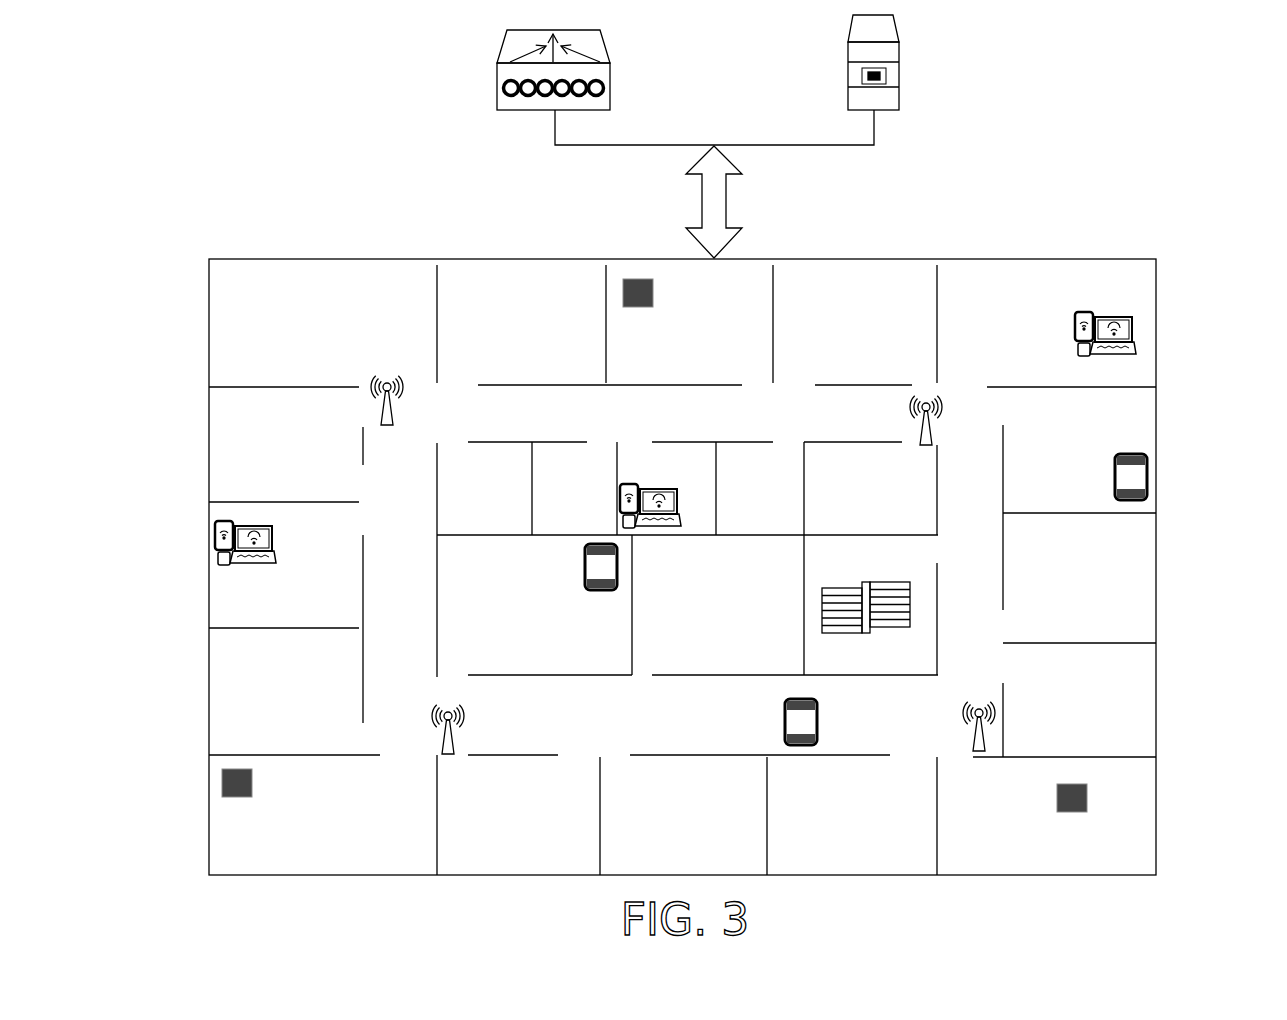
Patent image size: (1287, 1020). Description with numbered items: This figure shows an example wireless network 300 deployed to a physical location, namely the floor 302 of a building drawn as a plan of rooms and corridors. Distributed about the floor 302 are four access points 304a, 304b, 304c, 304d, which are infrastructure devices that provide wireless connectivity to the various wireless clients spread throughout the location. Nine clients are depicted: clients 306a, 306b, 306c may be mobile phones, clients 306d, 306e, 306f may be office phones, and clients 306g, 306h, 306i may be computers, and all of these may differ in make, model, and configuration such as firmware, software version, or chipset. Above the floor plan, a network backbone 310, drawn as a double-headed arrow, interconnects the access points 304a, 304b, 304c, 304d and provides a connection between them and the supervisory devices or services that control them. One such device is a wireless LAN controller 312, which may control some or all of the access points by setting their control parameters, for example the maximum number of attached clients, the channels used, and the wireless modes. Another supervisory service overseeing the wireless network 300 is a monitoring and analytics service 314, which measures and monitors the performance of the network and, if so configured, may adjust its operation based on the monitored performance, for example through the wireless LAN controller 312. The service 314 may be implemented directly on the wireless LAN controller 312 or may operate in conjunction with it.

The wireless network 300 is at (1216, 89).
The floor 302 is at (214, 886).
The access point 304a is at (357, 369).
The access point 304b is at (948, 423).
The access point 304c is at (419, 702).
The access point 304d is at (970, 694).
The wireless client 306a is at (823, 720).
The wireless client 306b is at (597, 601).
The wireless client 306c is at (1099, 468).
The wireless client 306d is at (654, 324).
The wireless client 306e is at (250, 811).
The wireless client 306f is at (1062, 823).
The wireless client 306g is at (243, 571).
The wireless client 306h is at (689, 512).
The wireless client 306i is at (1066, 333).
The network backbone 310 is at (687, 203).
The wireless LAN controller (WLC) 312 is at (484, 62).
The monitoring and analytics service 314 is at (896, 125).